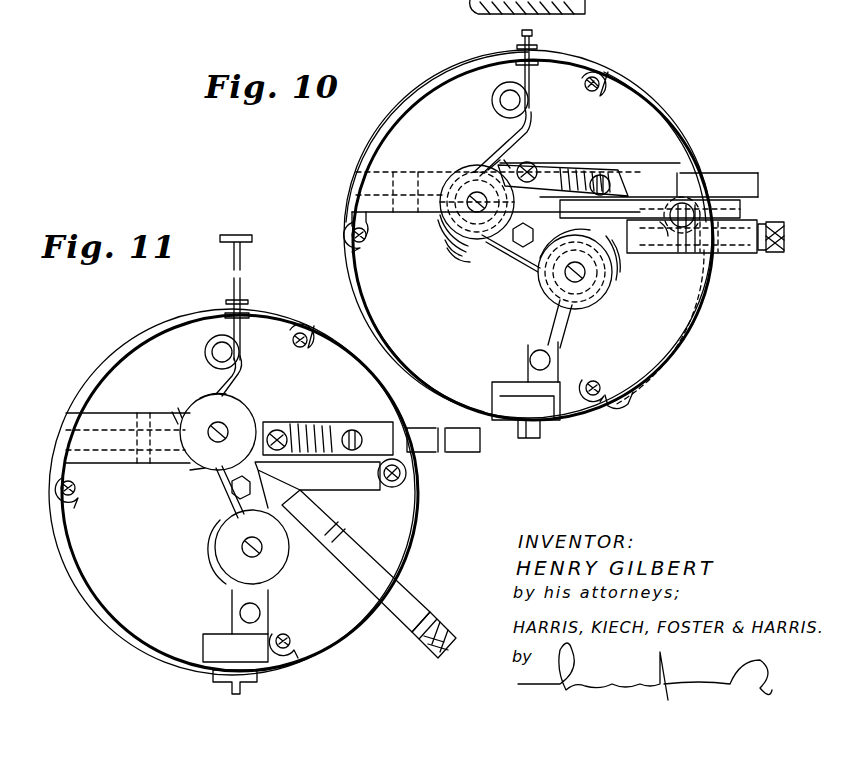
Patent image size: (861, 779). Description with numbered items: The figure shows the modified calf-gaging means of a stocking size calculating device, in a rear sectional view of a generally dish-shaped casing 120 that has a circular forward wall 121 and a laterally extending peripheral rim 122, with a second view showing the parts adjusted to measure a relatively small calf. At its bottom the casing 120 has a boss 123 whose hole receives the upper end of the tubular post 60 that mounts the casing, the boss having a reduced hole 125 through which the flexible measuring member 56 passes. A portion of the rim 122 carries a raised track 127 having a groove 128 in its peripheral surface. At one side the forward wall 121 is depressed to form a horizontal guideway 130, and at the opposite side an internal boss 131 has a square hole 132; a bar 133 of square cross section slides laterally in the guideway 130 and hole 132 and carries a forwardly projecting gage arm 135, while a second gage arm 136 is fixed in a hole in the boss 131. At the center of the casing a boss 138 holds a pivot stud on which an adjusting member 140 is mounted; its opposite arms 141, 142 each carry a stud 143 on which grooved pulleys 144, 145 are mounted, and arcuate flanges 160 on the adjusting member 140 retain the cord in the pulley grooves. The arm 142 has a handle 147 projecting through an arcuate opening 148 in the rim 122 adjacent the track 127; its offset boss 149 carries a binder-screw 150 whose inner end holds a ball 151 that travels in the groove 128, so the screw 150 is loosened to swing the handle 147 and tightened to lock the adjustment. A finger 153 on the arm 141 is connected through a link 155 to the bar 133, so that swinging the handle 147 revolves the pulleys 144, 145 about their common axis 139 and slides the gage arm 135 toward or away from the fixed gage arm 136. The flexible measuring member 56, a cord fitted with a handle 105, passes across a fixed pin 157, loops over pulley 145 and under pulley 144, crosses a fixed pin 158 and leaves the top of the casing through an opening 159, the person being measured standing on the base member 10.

In FIG. 10, the base member 10 is at (598, 17).
In FIG. 10, the flexible measuring member 56 is at (494, 130).
In FIG. 11, the flexible measuring member 56 is at (240, 378).
In FIG. 10, the tubular post 60 is at (542, 432).
In FIG. 11, the tubular post 60 is at (210, 680).
In FIG. 11, the handle 105 is at (237, 234).
In FIG. 10, the casing 120 is at (498, 14).
In FIG. 11, the casing 120 is at (178, 314).
In FIG. 10, the forward wall 121 is at (380, 120).
In FIG. 11, the forward wall 121 is at (402, 534).
In FIG. 10, the peripheral rim 122 is at (352, 266).
In FIG. 11, the peripheral rim 122 is at (72, 588).
In FIG. 10, the boss 123 is at (490, 386).
In FIG. 11, the boss 123 is at (204, 640).
In FIG. 10, the reduced hole 125 is at (565, 385).
In FIG. 10, the raised track 127 is at (655, 108).
In FIG. 11, the raised track 127 is at (408, 570).
In FIG. 10, the groove 128 is at (690, 322).
In FIG. 10, the horizontal guideway 130 is at (388, 170).
In FIG. 11, the horizontal guideway 130 is at (96, 452).
In FIG. 10, the internal boss 131 is at (700, 208).
In FIG. 11, the internal boss 131 is at (408, 462).
In FIG. 10, the square hole 132 is at (700, 170).
In FIG. 11, the square hole 132 is at (404, 428).
In FIG. 10, the bar 133 is at (745, 176).
In FIG. 11, the bar 133 is at (462, 452).
In FIG. 10, the gage arm 135 is at (398, 208).
In FIG. 11, the gage arm 135 is at (136, 416).
In FIG. 10, the second gage arm 136 is at (668, 232).
In FIG. 11, the second gage arm 136 is at (388, 488).
In FIG. 10, the boss 138 is at (512, 264).
In FIG. 11, the boss 138 is at (212, 508).
In FIG. 10, the common axis 139 is at (508, 250).
In FIG. 11, the common axis 139 is at (214, 490).
In FIG. 10, the adjusting member 140 is at (534, 272).
In FIG. 11, the adjusting member 140 is at (216, 520).
In FIG. 10, the arm 141 is at (508, 160).
In FIG. 11, the arm 141 is at (194, 470).
In FIG. 10, the arm 142 is at (600, 296).
In FIG. 11, the arm 142 is at (270, 500).
In FIG. 10, the stud 143 is at (438, 228).
In FIG. 11, the stud 143 is at (230, 412).
In FIG. 10, the grooved pulley 144 is at (456, 175).
In FIG. 11, the grooved pulley 144 is at (196, 402).
In FIG. 10, the grooved pulley 145 is at (590, 316).
In FIG. 11, the grooved pulley 145 is at (262, 580).
In FIG. 10, the handle 147 is at (688, 255).
In FIG. 11, the handle 147 is at (356, 568).
In FIG. 10, the arcuate opening 148 is at (612, 400).
In FIG. 11, the arcuate opening 148 is at (300, 652).
In FIG. 10, the offset boss 149 is at (736, 250).
In FIG. 11, the offset boss 149 is at (398, 606).
In FIG. 10, the binder-screw 150 is at (760, 220).
In FIG. 11, the binder-screw 150 is at (444, 636).
In FIG. 10, the ball 151 is at (712, 258).
In FIG. 10, the finger 153 is at (532, 162).
In FIG. 11, the finger 153 is at (276, 428).
In FIG. 10, the link 155 is at (580, 176).
In FIG. 11, the link 155 is at (316, 428).
In FIG. 10, the fixed pin 157 is at (552, 352).
In FIG. 11, the fixed pin 157 is at (262, 616).
In FIG. 10, the fixed pin 158 is at (500, 92).
In FIG. 11, the fixed pin 158 is at (206, 348).
In FIG. 10, the opening 159 is at (538, 48).
In FIG. 10, the arcuate flanges 160 is at (450, 250).
In FIG. 11, the arcuate flanges 160 is at (174, 412).